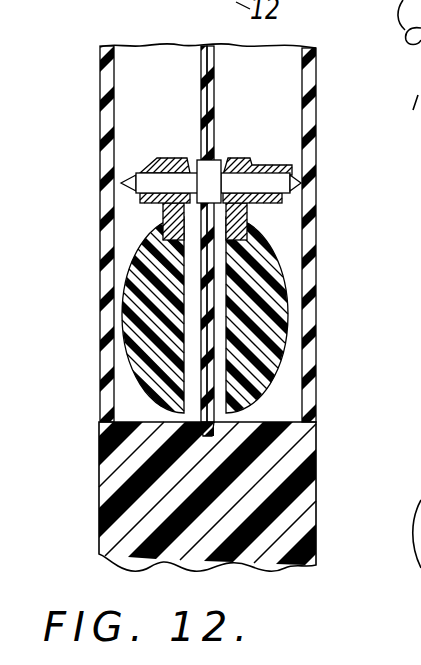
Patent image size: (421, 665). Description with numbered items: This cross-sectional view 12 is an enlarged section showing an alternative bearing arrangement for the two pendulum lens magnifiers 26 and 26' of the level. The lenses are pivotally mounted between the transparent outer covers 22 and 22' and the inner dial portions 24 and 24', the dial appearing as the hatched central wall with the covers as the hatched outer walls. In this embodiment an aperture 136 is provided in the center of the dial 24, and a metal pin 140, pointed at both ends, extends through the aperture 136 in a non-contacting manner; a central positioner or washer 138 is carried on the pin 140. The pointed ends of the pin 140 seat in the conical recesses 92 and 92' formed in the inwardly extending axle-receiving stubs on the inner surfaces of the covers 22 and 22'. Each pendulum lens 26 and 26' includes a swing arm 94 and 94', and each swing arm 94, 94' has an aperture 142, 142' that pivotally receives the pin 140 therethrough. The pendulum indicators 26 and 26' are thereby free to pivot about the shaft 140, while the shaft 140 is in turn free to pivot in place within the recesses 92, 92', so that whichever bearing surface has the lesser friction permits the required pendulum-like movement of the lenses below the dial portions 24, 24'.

The base / housing body 12 is at (294, 455).
The outer cover 22 is at (336, 235).
The outer cover 22' is at (77, 223).
The inner dial portion 24 is at (237, 241).
The inner dial portion 24' is at (178, 241).
The pendulum lens magnifier 26 is at (309, 315).
The pendulum lens magnifier 26' is at (103, 315).
The conical recess 92 is at (302, 195).
The conical recess 92' is at (115, 212).
The swing arm 94 is at (261, 234).
The swing arm 94' is at (123, 257).
The aperture 136 is at (230, 161).
The central positioner or washer 138 is at (198, 161).
The metal pin 140 is at (276, 163).
The aperture 142 is at (311, 222).
The aperture 142' is at (103, 240).